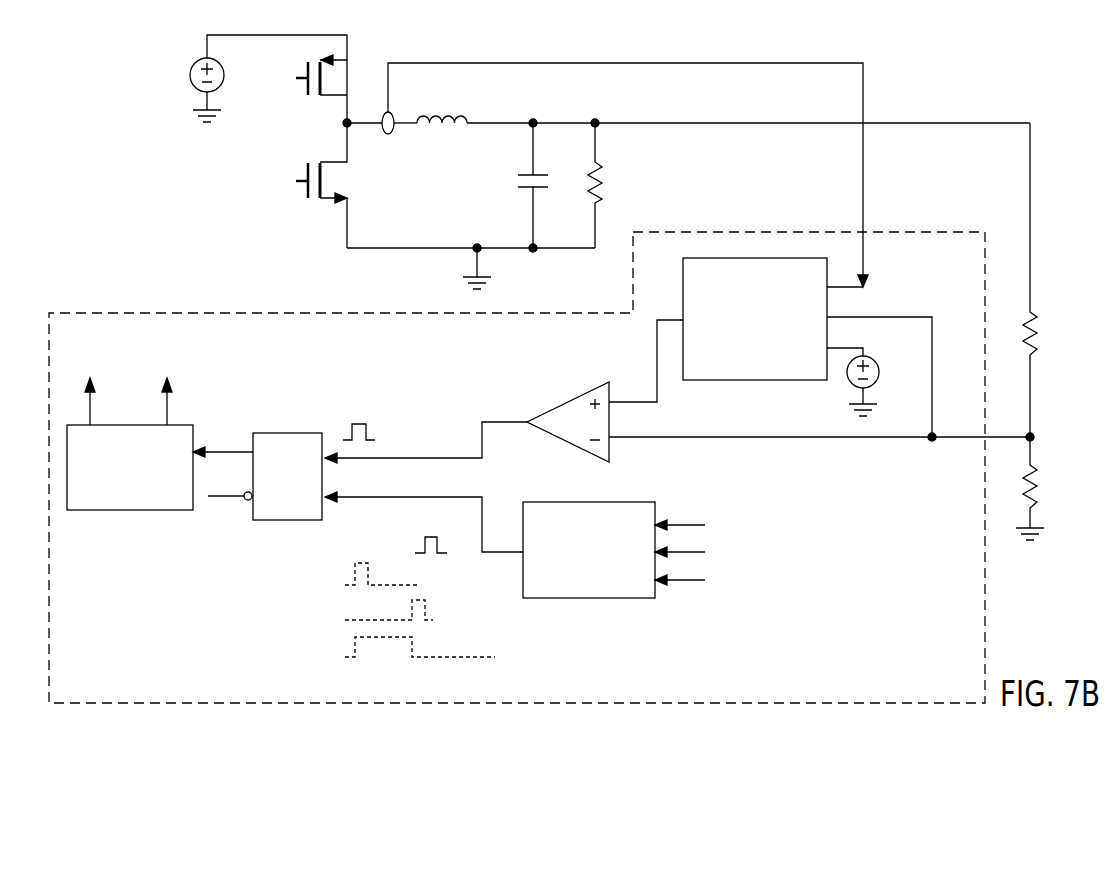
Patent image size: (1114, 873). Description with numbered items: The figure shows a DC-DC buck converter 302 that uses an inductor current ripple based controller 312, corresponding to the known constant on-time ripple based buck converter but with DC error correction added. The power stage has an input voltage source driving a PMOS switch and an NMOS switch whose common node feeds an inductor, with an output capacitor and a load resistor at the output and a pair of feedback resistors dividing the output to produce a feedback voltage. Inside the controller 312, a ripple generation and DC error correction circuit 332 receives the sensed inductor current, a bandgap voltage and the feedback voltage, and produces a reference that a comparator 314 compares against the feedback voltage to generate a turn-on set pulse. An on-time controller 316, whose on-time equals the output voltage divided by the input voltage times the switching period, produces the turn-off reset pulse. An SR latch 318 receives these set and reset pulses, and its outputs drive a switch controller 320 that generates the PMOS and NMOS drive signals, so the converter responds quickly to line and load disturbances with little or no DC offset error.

The DC-DC buck converter 302 is at (1063, 89).
The inductor current ripple based controller 312 is at (985, 590).
The comparator 314 is at (567, 397).
The on-time controller 316 is at (600, 598).
The SR latch 318 is at (290, 433).
The switch controller 320 is at (130, 510).
The ripple generation and DC error correction circuit 332 is at (750, 383).